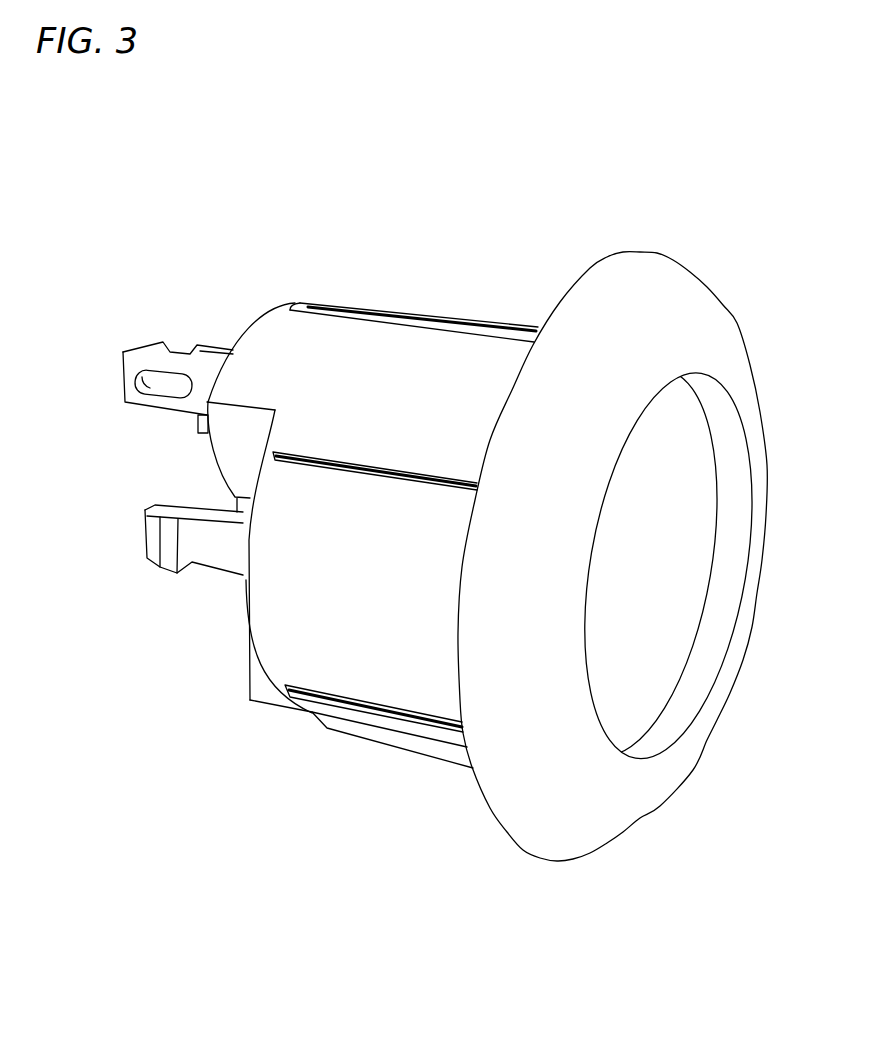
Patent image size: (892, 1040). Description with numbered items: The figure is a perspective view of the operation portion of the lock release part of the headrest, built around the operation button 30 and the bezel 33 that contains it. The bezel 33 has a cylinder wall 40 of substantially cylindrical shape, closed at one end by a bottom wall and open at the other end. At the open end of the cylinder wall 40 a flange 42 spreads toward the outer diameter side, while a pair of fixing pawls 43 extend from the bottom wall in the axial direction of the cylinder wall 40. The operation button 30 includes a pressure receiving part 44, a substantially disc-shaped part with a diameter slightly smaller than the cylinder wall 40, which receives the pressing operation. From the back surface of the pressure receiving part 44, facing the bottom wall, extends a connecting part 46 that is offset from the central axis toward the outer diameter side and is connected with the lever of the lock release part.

The operation button 30 is at (646, 729).
The bezel 33 is at (479, 320).
The cylinder wall 40 is at (363, 670).
The flange 42 is at (497, 788).
The fixing pawls 43 is at (207, 562).
The pressure receiving part 44 is at (675, 612).
The connecting part 46 is at (171, 352).